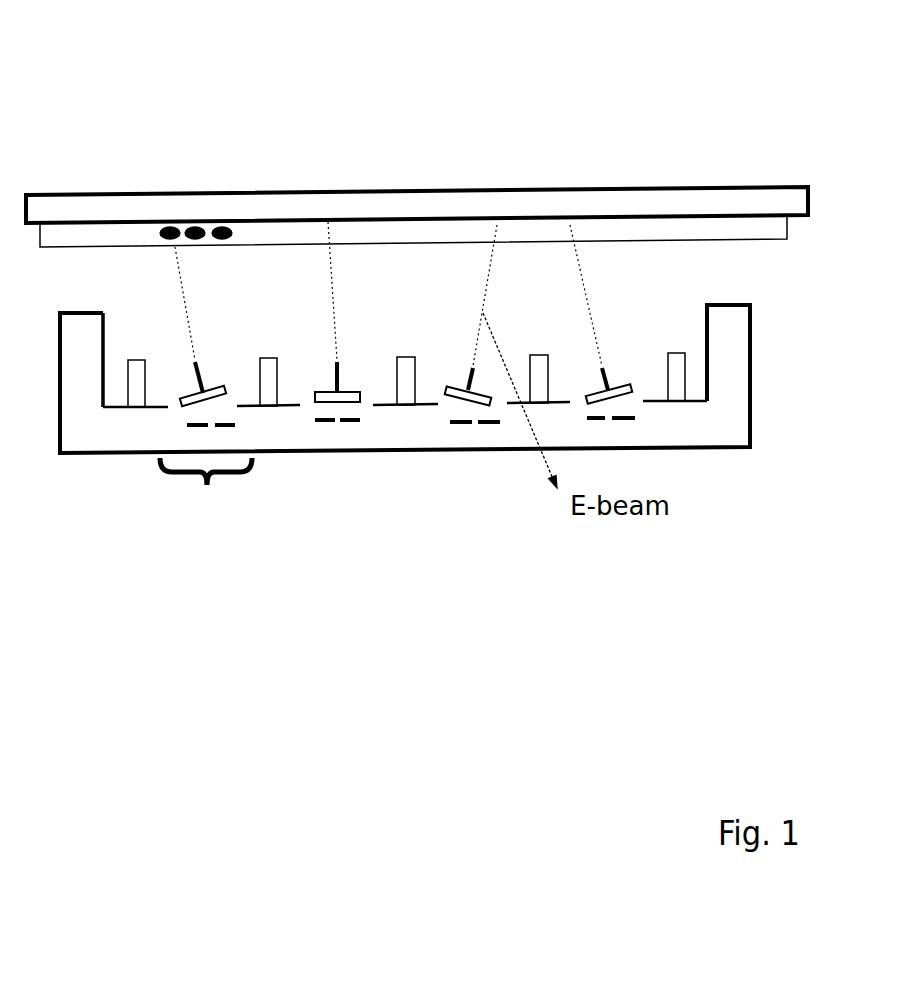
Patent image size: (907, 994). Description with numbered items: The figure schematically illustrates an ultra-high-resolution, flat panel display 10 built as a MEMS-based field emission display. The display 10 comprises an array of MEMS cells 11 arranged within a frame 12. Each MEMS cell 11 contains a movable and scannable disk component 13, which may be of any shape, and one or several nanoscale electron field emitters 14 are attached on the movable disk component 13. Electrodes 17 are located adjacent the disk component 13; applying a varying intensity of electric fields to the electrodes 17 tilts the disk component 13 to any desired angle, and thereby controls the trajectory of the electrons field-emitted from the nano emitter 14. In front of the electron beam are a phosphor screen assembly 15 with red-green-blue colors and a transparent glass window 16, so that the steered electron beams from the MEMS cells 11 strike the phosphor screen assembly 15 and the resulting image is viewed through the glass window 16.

The flat panel display 10 is at (368, 112).
The MEMS cell 11 is at (196, 497).
The frame 12 is at (707, 425).
The movable disk component 13 is at (463, 402).
The nanoscale electron field emitter 14 is at (197, 372).
The phosphor screen assembly 15 is at (643, 230).
The transparent glass window 16 is at (58, 205).
The electrode 17 is at (350, 423).